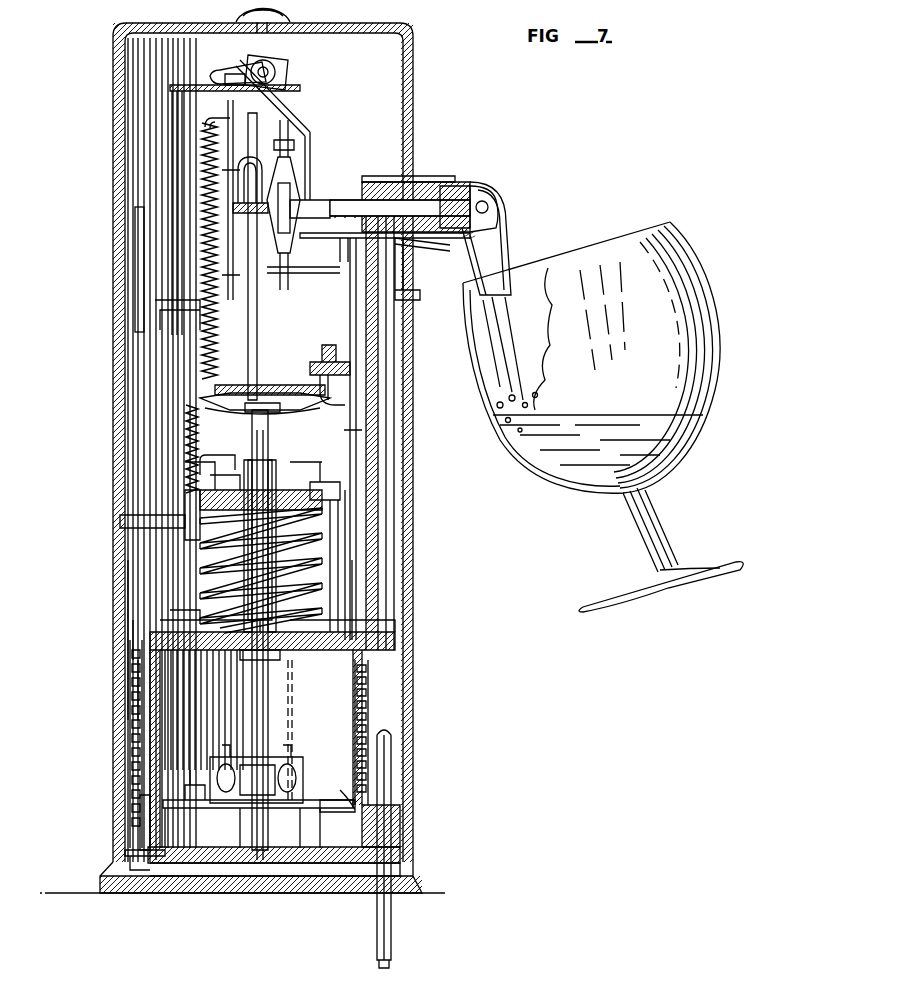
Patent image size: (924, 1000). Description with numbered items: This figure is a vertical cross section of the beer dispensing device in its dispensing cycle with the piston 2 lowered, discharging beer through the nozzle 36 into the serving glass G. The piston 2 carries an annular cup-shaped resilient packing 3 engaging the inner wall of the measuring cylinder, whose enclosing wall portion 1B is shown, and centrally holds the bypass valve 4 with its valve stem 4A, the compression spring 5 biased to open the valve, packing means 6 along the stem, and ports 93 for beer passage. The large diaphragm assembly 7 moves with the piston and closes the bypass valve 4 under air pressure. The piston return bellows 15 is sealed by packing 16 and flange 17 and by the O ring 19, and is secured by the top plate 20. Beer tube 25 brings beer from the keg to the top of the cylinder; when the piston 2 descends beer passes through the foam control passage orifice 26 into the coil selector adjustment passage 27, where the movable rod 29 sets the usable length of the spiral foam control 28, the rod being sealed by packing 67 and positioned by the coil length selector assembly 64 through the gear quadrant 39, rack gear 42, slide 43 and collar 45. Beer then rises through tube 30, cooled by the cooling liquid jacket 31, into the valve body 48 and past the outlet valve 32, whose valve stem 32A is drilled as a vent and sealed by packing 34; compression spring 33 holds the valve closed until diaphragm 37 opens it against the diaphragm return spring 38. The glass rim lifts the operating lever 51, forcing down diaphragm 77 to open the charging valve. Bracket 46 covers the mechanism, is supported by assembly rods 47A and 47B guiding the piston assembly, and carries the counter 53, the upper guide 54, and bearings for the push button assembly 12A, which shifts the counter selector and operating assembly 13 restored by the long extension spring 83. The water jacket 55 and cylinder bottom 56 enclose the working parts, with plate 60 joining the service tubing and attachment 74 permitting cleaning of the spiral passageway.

The bracket 46 is at (225, 42).
The counter 53 is at (270, 62).
The assembly rod 47A is at (178, 85).
The upper guide 54 is at (164, 196).
The counter selector and operating assembly 13 is at (210, 282).
The long extension spring 83 is at (205, 300).
The diaphragm return spring 38 is at (296, 190).
The compression spring 33 is at (347, 200).
The packing 34 is at (400, 183).
The valve body 48 is at (432, 183).
The valve stem 32A is at (450, 190).
The outlet valve 32 is at (490, 203).
The nozzle 36 is at (506, 240).
The operating lever 51 is at (437, 245).
The push button assembly 12A is at (417, 285).
The diaphragm 37 is at (292, 276).
The diaphragm 77 is at (322, 352).
The diaphragm assembly 7 is at (275, 385).
The assembly rod 47B is at (350, 348).
The slide 43 is at (185, 456).
The gear quadrant 39 is at (265, 414).
The O ring 19 is at (200, 484).
The collar 45 is at (118, 520).
The rack gear 42 is at (170, 530).
The top plate 20 is at (342, 487).
The valve stem 4A is at (320, 508).
The cooling liquid jacket 31 is at (372, 545).
The piston return bellows 15 is at (322, 572).
The tube 30 is at (382, 600).
The movable rod 29 is at (122, 588).
The packing 67 is at (127, 632).
The flange 17 is at (382, 633).
The packing 16 is at (286, 655).
The coil length adjustor or selector assembly 64 is at (126, 691).
The compression spring 5 is at (278, 724).
The enclosing wall portion 1B is at (370, 706).
The ports 93 is at (292, 770).
The foam control 28 is at (200, 760).
The water jacket 55 is at (114, 797).
The annular cup-shaped resilient packing 3 is at (362, 802).
The coil selector adjustment passage 27 is at (132, 820).
The packing means 6 is at (246, 808).
The foam control passage orifice 26 is at (122, 852).
The positioning and securing plate 60 is at (375, 862).
The cylinder bottom 56 is at (232, 863).
The bypass valve 4 is at (262, 858).
The piston 2 is at (313, 810).
The beer tube 25 is at (392, 925).
The cleaning attachment 74 is at (115, 882).
The serving glass G is at (603, 417).